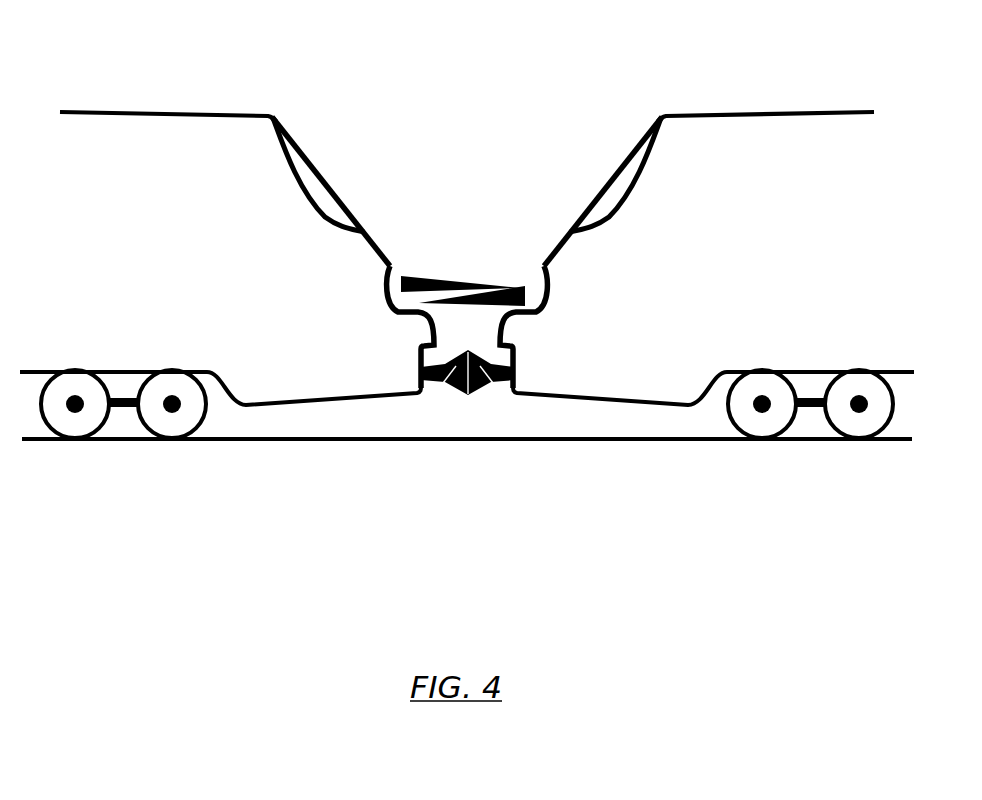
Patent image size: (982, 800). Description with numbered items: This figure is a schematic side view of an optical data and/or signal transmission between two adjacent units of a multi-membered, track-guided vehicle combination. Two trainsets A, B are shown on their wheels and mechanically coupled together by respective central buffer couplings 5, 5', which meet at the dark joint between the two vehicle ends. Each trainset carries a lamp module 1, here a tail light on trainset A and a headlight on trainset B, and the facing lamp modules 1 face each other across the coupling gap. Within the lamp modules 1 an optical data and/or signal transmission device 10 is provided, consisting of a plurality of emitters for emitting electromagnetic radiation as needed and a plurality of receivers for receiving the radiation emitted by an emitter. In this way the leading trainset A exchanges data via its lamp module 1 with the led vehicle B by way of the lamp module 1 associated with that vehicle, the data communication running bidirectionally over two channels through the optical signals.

The trainset A is at (228, 180).
The trainset B is at (678, 180).
The lamp module 1 is at (467, 238).
The optical data and/or signal transmission device 10 is at (532, 285).
The central buffer coupling 5 is at (405, 443).
The central buffer coupling 5' is at (535, 443).